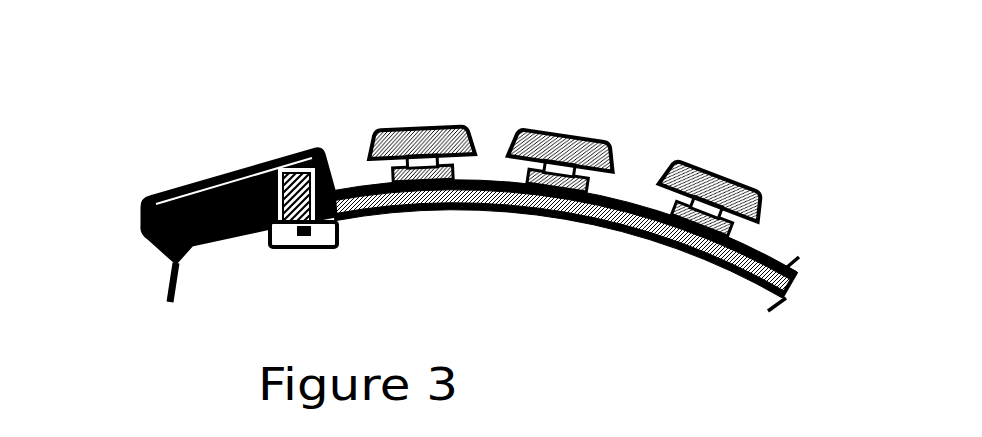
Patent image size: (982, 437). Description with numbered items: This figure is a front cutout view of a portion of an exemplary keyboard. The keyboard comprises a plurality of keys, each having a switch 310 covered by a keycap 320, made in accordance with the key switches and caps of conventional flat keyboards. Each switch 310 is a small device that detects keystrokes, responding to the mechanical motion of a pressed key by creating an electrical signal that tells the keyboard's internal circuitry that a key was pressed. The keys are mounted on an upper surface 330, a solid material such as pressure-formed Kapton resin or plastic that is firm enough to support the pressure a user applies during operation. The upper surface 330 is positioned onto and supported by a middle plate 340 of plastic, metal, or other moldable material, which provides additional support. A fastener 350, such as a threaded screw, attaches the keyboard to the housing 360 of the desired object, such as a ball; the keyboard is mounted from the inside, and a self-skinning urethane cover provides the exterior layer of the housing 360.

The switch 310 is at (603, 147).
The keycap 320 is at (367, 137).
The upper surface 330 is at (625, 213).
The middle plate 340 is at (403, 200).
The fastener 350 is at (278, 250).
The housing 360 is at (177, 196).